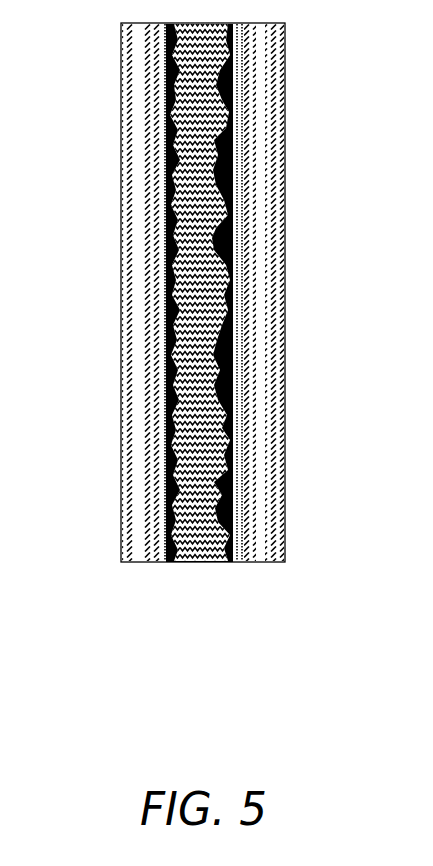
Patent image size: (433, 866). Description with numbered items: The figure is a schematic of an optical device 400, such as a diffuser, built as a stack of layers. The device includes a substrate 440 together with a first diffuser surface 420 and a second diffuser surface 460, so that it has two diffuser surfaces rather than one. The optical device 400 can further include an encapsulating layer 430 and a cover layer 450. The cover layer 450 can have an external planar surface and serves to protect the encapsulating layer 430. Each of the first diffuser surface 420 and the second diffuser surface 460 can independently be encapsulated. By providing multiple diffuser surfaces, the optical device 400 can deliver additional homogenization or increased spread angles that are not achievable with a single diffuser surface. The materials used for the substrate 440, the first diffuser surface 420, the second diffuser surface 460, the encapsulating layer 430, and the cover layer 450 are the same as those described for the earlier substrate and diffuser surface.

The optical device 400 is at (54, 30).
The first diffuser surface 420 is at (216, 530).
The encapsulating layer 430 is at (200, 540).
The substrate 440 is at (285, 487).
The cover layer 450 is at (130, 462).
The second diffuser surface 460 is at (165, 530).